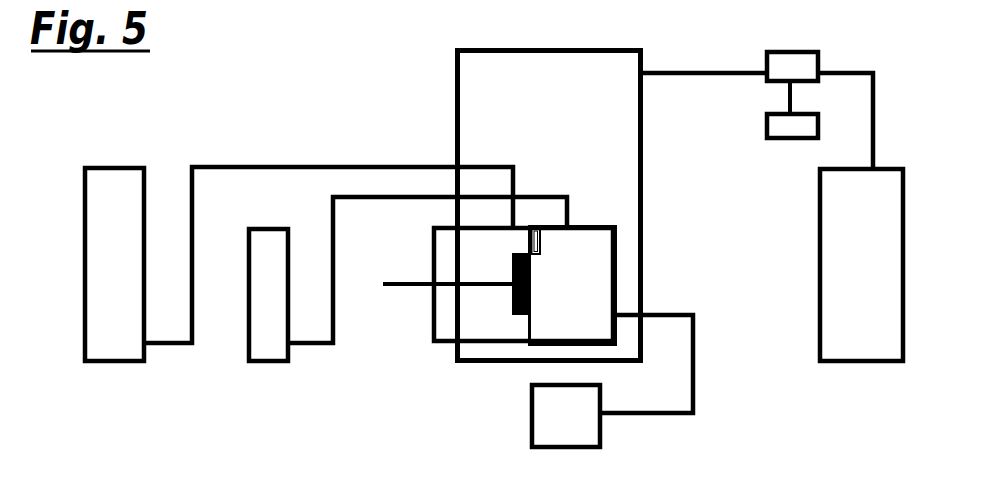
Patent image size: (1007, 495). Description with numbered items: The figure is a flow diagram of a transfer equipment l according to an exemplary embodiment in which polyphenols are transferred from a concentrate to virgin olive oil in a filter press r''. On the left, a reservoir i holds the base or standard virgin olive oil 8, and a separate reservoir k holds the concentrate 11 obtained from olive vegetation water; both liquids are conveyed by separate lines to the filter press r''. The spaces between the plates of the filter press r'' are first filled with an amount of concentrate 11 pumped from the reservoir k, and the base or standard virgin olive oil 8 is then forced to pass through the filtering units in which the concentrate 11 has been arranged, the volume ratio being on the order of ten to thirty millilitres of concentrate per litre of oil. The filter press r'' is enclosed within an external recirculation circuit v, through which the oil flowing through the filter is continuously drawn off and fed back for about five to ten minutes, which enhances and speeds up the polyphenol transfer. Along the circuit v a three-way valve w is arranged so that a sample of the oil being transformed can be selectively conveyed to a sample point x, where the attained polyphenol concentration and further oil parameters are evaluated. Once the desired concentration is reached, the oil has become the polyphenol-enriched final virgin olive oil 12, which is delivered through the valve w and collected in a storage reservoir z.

The mass transfer device l is at (302, 90).
The reservoir i is at (73, 332).
The reservoir k is at (234, 332).
The base or standard virgin olive oil 8 is at (382, 165).
The concentrate 11 is at (317, 347).
The final virgin olive oil 12 is at (872, 132).
The external circuit v is at (645, 225).
The filter press r'' is at (494, 286).
The three-way valve w is at (754, 60).
The sample point x is at (754, 130).
The storage reservoir z is at (804, 248).